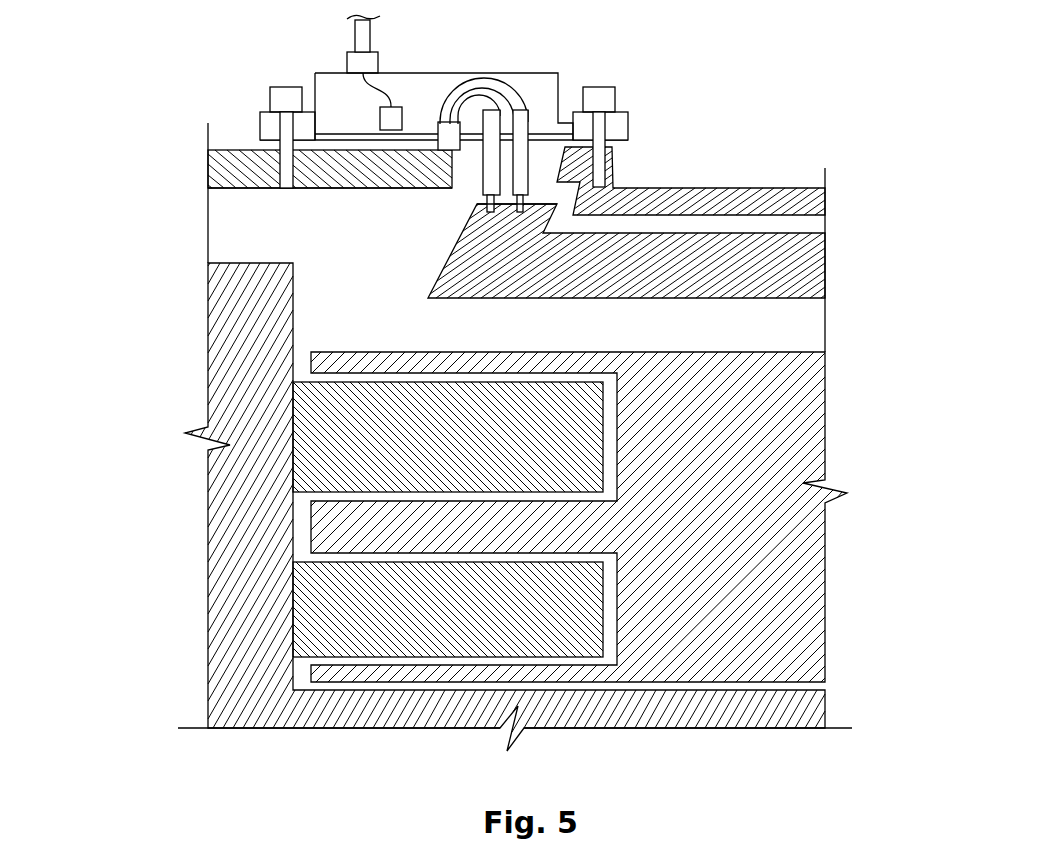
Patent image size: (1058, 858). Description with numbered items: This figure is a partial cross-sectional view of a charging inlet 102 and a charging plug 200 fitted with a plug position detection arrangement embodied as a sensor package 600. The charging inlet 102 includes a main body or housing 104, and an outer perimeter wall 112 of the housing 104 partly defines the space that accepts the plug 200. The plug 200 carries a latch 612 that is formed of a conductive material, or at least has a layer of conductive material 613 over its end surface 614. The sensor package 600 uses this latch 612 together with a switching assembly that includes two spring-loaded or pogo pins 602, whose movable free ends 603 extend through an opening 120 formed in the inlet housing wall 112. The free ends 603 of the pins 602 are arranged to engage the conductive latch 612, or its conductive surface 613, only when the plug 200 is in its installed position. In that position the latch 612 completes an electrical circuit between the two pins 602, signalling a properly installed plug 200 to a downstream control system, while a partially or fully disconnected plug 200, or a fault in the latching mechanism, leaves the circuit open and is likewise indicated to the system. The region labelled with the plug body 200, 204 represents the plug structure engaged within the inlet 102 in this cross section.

The charging inlet 102 is at (237, 403).
The housing 104 is at (433, 429).
The perimeter wall 112 is at (263, 168).
The opening 120 is at (458, 199).
The charging plug 200 is at (635, 517).
The fins 204 is at (775, 430).
The sensor package 600 is at (490, 146).
The pogo pins 602 is at (518, 137).
The free ends 603 is at (475, 207).
The latch 612 is at (792, 258).
The layer of conductive material 613 is at (535, 115).
The end surface 614 is at (540, 203).